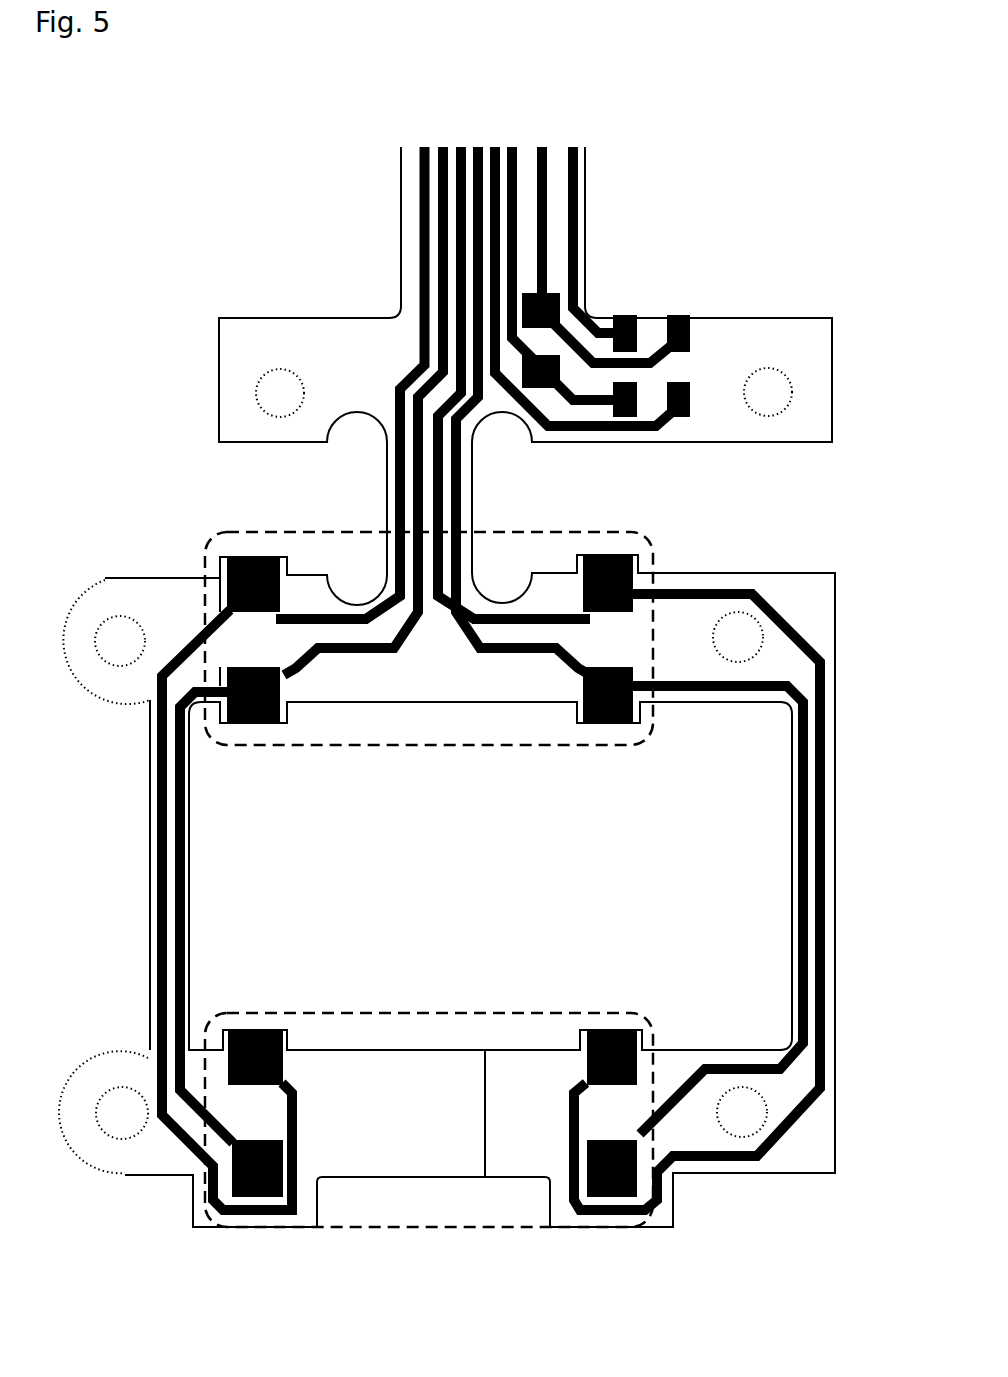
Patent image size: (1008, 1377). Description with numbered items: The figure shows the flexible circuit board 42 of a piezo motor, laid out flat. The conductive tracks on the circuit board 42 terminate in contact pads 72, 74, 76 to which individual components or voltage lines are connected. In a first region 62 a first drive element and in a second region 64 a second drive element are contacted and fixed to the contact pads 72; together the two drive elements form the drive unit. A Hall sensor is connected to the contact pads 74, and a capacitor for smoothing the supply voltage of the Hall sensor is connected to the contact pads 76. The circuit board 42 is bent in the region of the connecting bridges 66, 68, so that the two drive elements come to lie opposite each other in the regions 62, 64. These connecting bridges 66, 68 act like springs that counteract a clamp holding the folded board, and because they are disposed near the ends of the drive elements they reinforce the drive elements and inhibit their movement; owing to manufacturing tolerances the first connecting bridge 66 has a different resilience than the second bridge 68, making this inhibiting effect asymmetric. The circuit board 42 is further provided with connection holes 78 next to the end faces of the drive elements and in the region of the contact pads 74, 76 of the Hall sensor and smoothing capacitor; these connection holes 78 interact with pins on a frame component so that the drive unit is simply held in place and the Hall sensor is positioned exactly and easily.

The circuit board 42 is at (243, 262).
The first region 62 is at (214, 1026).
The second region 64 is at (222, 536).
The first connecting bridge 66 is at (178, 868).
The second connecting bridge 68 is at (816, 868).
The contact pads 72 is at (598, 1140).
The contact pads 74 is at (770, 232).
The contact pads 76 is at (554, 352).
The connection holes 78 is at (108, 1237).